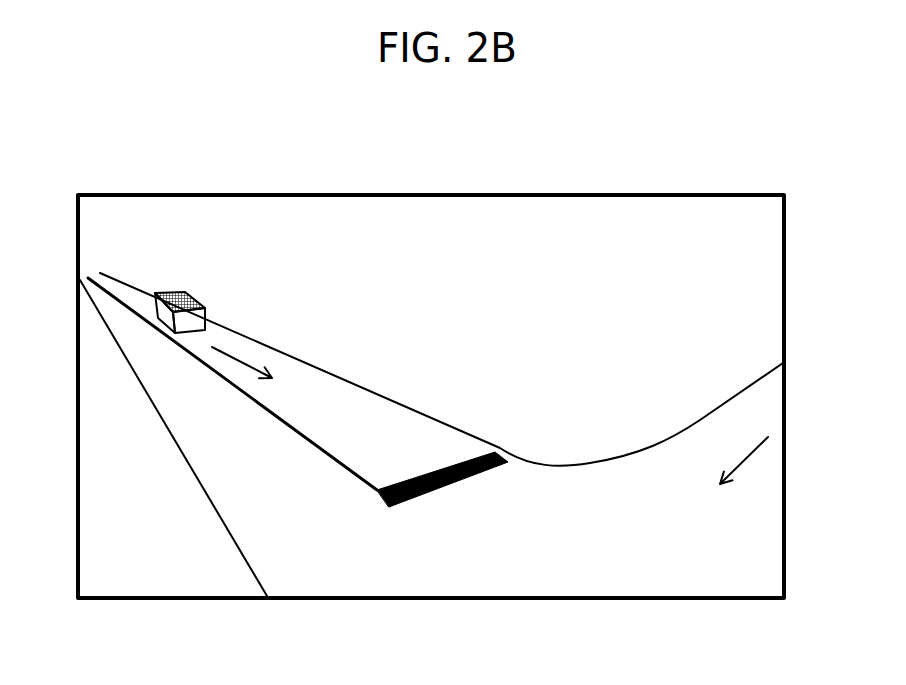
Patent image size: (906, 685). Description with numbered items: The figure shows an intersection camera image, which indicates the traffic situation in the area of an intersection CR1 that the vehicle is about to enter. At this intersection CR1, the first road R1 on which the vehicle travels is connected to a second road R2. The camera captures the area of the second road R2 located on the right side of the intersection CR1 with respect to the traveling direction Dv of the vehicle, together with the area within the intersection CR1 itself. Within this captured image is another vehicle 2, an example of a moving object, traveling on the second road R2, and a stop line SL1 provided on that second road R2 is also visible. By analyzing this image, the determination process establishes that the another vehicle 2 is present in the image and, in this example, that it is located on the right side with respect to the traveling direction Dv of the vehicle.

The another vehicle 2 is at (182, 291).
The stop line SL1 is at (420, 475).
The first road R1 is at (733, 447).
The second road R2 is at (240, 460).
The traveling direction Dv is at (750, 453).
The intersection CR1 is at (670, 563).